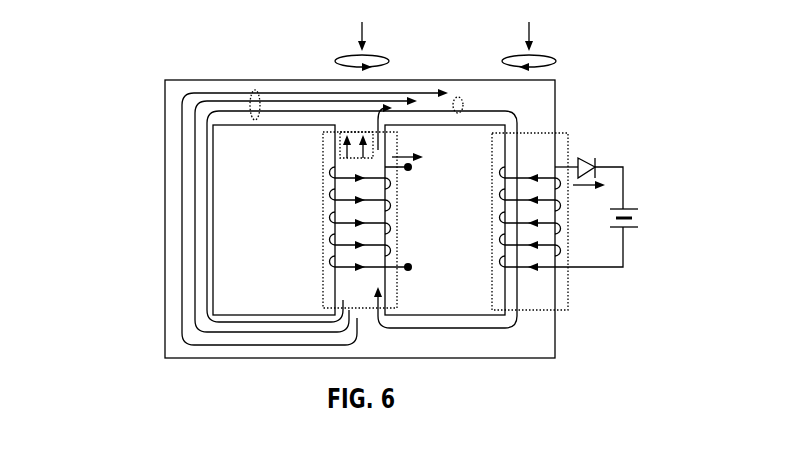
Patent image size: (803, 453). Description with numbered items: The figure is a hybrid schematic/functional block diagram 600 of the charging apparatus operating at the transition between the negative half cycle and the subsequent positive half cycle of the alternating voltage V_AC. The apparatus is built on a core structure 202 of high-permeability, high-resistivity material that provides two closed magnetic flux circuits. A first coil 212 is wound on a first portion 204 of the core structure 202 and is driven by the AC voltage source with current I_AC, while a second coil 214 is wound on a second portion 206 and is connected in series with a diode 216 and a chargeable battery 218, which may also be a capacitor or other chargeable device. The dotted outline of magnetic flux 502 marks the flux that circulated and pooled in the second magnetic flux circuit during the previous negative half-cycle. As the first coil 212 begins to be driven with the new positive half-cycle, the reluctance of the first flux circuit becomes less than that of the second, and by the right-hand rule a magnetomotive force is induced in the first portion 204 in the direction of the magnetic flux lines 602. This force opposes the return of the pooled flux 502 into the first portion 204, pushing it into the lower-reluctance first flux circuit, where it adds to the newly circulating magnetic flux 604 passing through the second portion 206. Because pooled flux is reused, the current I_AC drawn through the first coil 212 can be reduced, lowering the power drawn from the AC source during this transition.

The hybrid schematic/functional block diagram 600 is at (147, 49).
The core structure 202 is at (180, 87).
The magnetic flux 502 is at (257, 92).
The magnetic flux 604 is at (458, 97).
The magnetic flux lines 602 is at (340, 157).
The first portion 204 is at (323, 235).
The first coil 212 is at (326, 258).
The second portion 206 is at (498, 188).
The second coil 214 is at (498, 215).
The diode 216 is at (590, 162).
The chargeable battery 218 is at (637, 207).